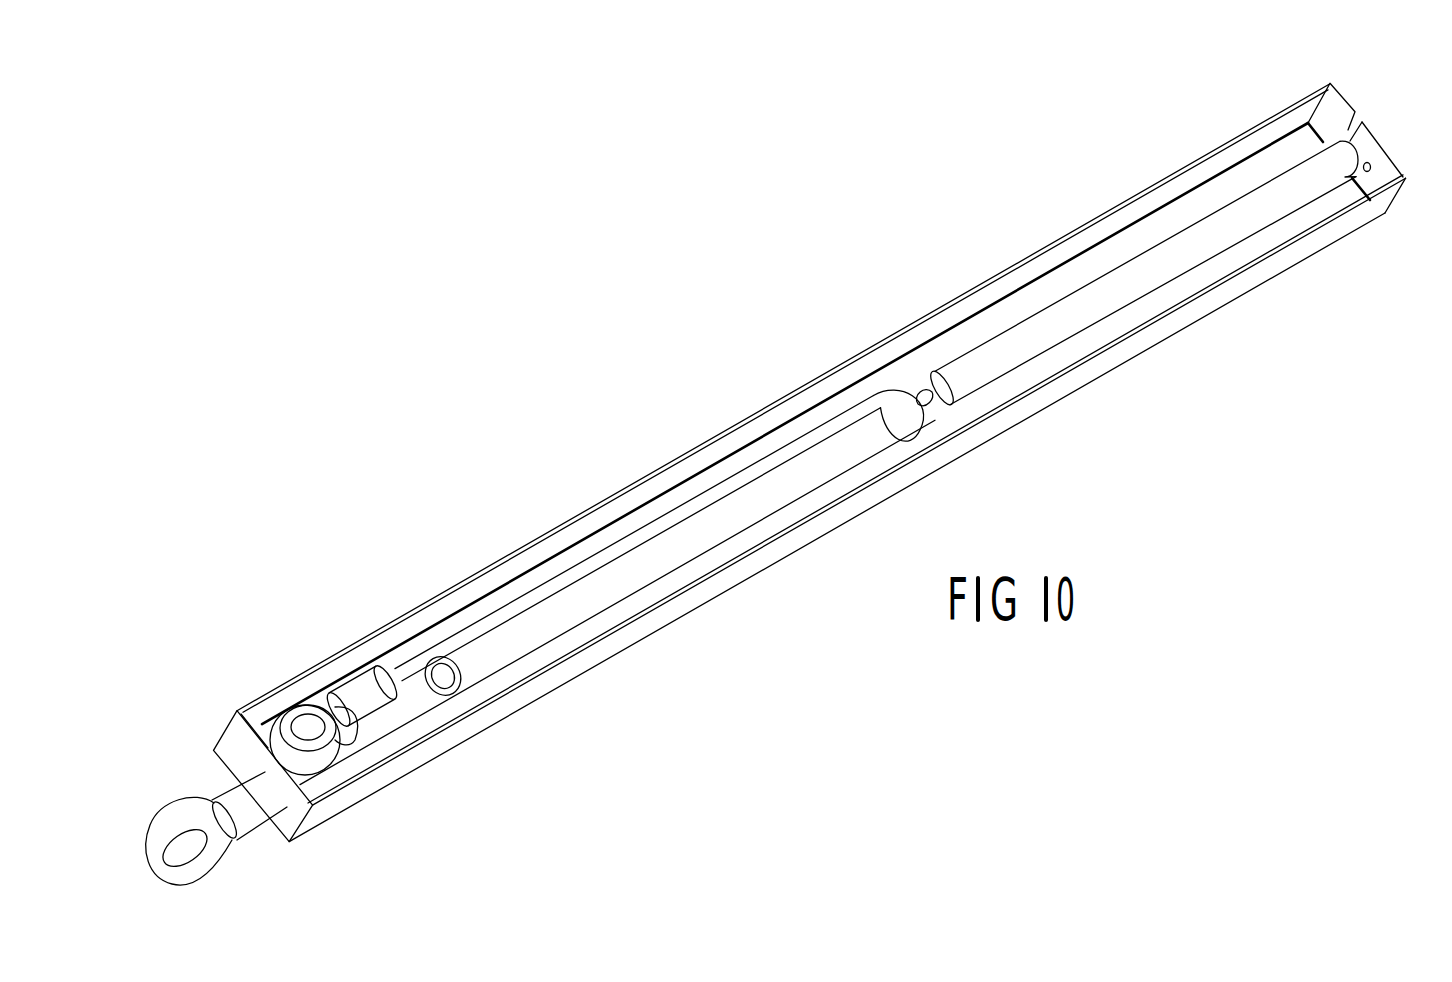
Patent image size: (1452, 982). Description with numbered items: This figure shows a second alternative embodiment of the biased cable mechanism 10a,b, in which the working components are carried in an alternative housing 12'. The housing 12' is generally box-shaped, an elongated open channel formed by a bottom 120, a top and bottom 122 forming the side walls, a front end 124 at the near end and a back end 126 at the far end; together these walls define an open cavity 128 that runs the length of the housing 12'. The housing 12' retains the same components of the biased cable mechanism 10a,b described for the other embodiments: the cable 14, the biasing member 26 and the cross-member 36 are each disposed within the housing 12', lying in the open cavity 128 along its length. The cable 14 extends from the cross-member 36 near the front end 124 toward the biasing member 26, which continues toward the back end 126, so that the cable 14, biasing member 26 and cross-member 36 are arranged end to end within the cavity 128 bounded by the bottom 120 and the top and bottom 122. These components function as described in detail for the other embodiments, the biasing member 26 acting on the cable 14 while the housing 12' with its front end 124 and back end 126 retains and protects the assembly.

The housing 12' is at (783, 398).
The biased cable mechanism 10a,b is at (707, 415).
The top and bottom 122 is at (1175, 168).
The bottom 120 is at (1262, 158).
The back end 126 is at (1347, 108).
The front end 124 is at (225, 728).
The cross-member 36 is at (302, 709).
The cable 14 is at (500, 615).
The biasing member 26 is at (1080, 340).
The open cavity 128 is at (903, 372).